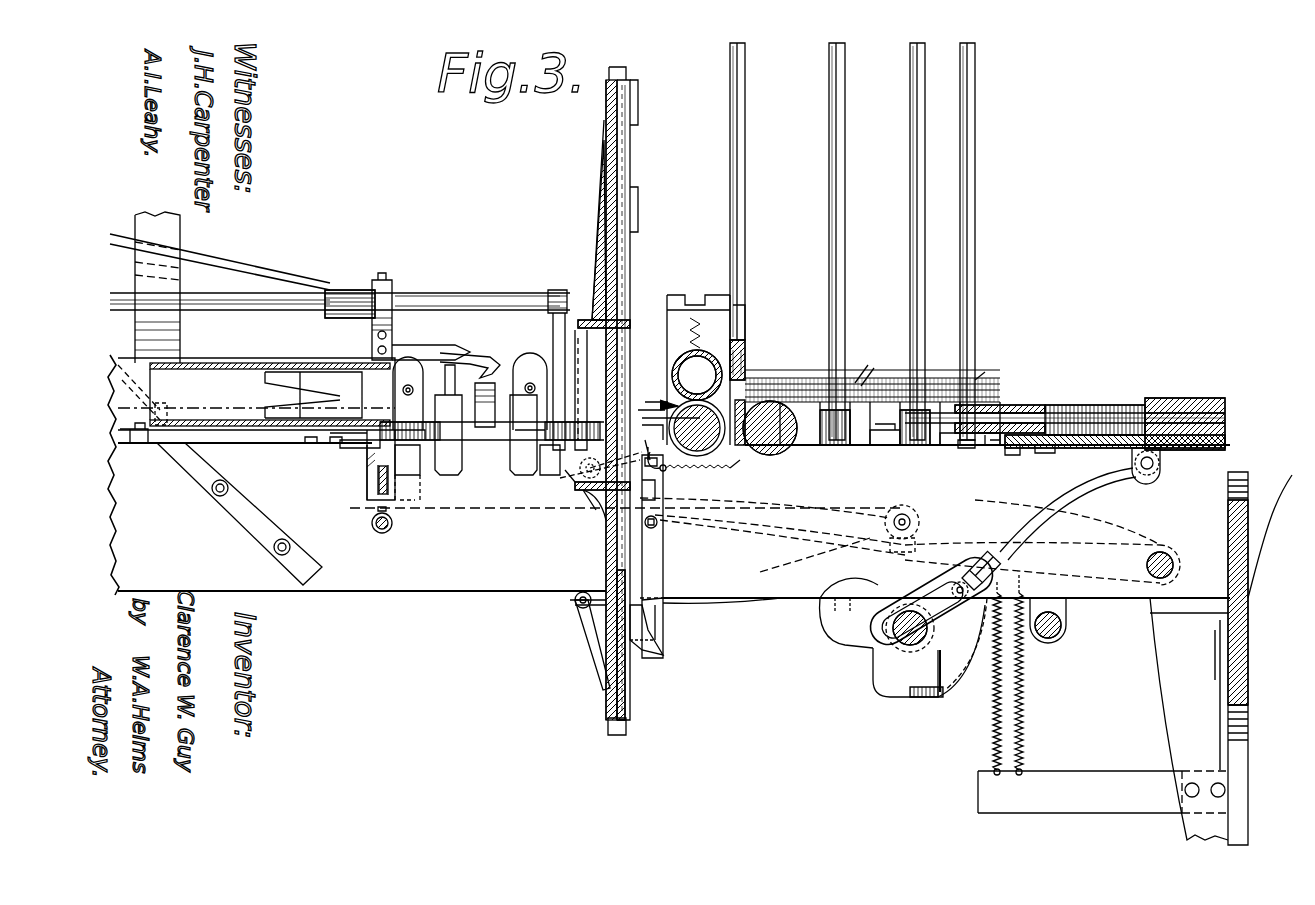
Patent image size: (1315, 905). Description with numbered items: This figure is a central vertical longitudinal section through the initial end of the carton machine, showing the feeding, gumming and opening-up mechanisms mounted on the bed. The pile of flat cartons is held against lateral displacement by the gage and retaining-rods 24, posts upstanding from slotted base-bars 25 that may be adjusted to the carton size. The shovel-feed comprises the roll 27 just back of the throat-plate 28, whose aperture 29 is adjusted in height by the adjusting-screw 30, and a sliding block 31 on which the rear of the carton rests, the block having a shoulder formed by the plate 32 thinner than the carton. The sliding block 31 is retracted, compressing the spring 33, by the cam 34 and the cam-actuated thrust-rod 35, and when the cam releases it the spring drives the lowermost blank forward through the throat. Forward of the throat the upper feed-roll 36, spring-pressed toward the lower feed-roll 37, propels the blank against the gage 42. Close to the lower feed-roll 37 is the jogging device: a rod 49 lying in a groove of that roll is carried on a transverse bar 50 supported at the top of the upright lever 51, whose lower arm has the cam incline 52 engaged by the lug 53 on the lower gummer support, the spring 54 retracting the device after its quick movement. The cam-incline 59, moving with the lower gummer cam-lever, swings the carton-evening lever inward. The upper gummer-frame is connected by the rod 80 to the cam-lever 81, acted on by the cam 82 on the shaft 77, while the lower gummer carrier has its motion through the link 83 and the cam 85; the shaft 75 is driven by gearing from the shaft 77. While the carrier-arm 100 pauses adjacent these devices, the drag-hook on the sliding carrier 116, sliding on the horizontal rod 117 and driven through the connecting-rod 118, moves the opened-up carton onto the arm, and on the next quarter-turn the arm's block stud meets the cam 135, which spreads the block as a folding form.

The gage and retaining-rods 24 is at (923, 266).
The slotted base-bars 25 is at (888, 450).
The roll 27 is at (778, 453).
The throat-plate 28 is at (745, 378).
The aperture 29 is at (872, 378).
The adjusting-screw 30 is at (742, 318).
The sliding block 31 is at (1030, 402).
The plate 32 is at (995, 407).
The spring 33 is at (1098, 406).
The cam 34 is at (950, 705).
The cam-actuated thrust-rod 35 is at (1062, 505).
The upper feed-roll 36 is at (672, 368).
The lower feed-roll 37 is at (712, 450).
The gage 42 is at (400, 398).
The rod 49 is at (667, 398).
The transverse bar 50 is at (670, 466).
The upright lever 51 is at (664, 542).
The cam surface or incline 52 is at (650, 622).
The lug 53 is at (606, 648).
The spring 54 is at (712, 480).
The cam-incline 59 is at (590, 470).
The shaft 75 is at (1062, 637).
The shaft 77 is at (882, 645).
The rod 80 is at (604, 218).
The cam-lever 81 is at (900, 510).
The cam 82 is at (838, 620).
The link 83 is at (580, 620).
The cam 85 is at (888, 683).
The arm 100 is at (256, 394).
The sliding carrier 116 is at (383, 284).
The horizontal rod 117 is at (470, 294).
The connecting-rod 118 is at (255, 283).
The cam 135 is at (207, 478).